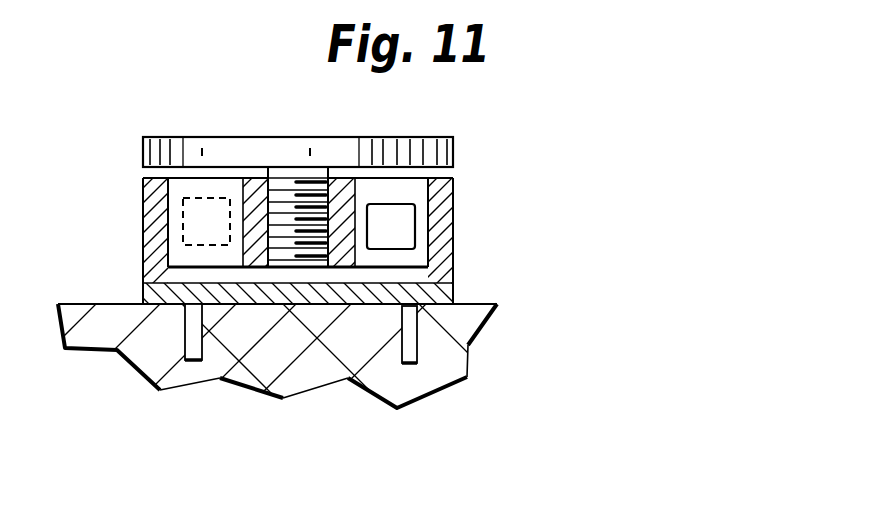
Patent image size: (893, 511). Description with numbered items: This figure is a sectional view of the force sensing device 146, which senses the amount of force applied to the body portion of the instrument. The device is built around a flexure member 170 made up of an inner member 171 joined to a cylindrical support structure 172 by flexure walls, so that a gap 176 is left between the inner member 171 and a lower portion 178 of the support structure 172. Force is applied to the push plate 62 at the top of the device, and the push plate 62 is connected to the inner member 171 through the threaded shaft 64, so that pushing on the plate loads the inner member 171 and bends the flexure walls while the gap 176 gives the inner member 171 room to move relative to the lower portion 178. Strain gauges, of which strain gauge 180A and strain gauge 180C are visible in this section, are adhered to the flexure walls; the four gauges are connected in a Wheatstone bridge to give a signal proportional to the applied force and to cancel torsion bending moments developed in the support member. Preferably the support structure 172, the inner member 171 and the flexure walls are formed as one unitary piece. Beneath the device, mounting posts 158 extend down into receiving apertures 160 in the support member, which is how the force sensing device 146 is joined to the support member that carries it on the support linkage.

The push plate 62 is at (198, 138).
The threaded shaft 64 is at (300, 270).
The force sensing device 146 is at (482, 172).
The mounting posts 158 is at (183, 332).
The receiving apertures 160 is at (202, 348).
The flexure member 170 is at (483, 209).
The inner member 171 is at (341, 270).
The cylindrical support structure 172 is at (143, 217).
The gap 176 is at (413, 276).
The lower portion of the support structure 178 is at (143, 243).
The strain gauge 180A is at (387, 220).
The strain gauge 180C is at (146, 182).